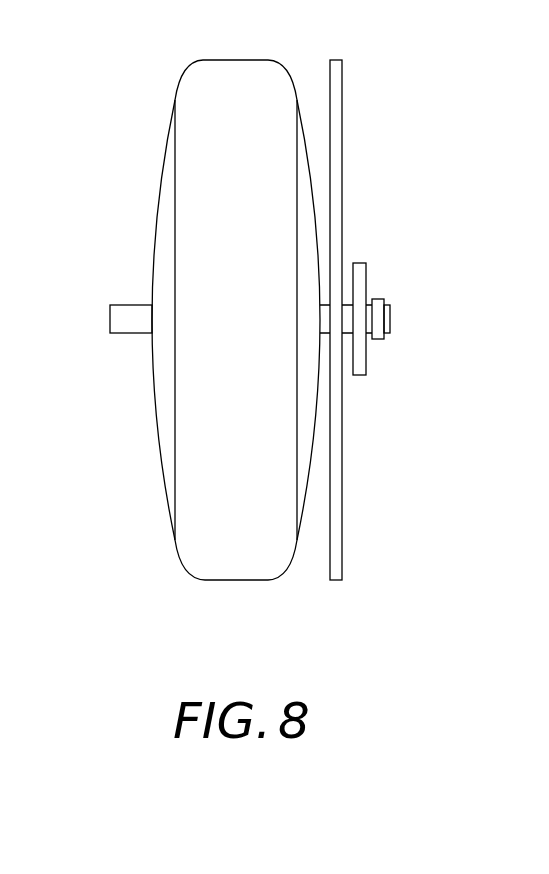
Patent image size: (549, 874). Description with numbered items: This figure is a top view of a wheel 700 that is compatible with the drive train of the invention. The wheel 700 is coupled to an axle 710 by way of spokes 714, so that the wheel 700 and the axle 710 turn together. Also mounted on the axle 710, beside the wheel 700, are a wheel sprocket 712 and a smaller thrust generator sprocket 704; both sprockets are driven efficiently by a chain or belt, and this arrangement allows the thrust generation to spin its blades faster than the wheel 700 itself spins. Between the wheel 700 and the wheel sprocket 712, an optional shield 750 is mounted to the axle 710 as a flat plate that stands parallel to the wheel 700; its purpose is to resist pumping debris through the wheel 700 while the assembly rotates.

The wheel 700 is at (223, 90).
The spokes 714 is at (160, 195).
The axle 710 is at (110, 317).
The shield 750 is at (342, 137).
The wheel sprocket 712 is at (360, 263).
The thrust generator sprocket 704 is at (378, 319).